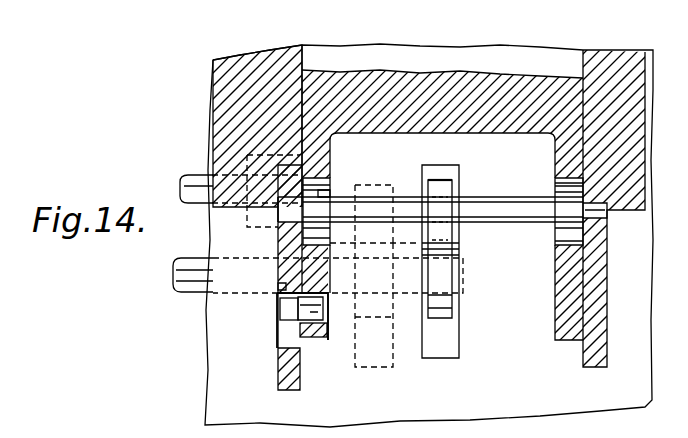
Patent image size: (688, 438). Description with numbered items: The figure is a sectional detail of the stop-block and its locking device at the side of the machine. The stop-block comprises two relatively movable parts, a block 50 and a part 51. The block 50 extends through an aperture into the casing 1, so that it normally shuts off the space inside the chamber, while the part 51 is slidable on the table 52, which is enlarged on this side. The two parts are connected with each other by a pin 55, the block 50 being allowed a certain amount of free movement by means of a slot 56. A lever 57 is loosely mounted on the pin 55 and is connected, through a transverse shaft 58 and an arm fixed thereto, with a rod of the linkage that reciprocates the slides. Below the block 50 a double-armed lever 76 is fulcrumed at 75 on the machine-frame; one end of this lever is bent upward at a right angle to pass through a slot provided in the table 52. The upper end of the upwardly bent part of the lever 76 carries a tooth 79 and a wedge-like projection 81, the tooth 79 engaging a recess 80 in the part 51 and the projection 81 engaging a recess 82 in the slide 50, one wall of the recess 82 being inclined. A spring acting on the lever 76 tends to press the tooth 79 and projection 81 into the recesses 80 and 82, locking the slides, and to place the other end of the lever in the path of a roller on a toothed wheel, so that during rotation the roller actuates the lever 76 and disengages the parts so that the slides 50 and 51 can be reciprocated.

The casing 1 is at (222, 98).
The block 50 is at (560, 140).
The part 51 is at (612, 300).
The table 52 is at (434, 47).
The pin 55 is at (370, 197).
The slot 56 is at (330, 238).
The lever 57 is at (442, 180).
The transverse shaft 58 is at (192, 293).
The fulcrum 75 is at (240, 191).
The double-armed lever 76 is at (328, 197).
The tooth 79 is at (278, 311).
The recess 80 is at (278, 340).
The wedge-like projection 81 is at (322, 309).
The recess 82 is at (318, 338).